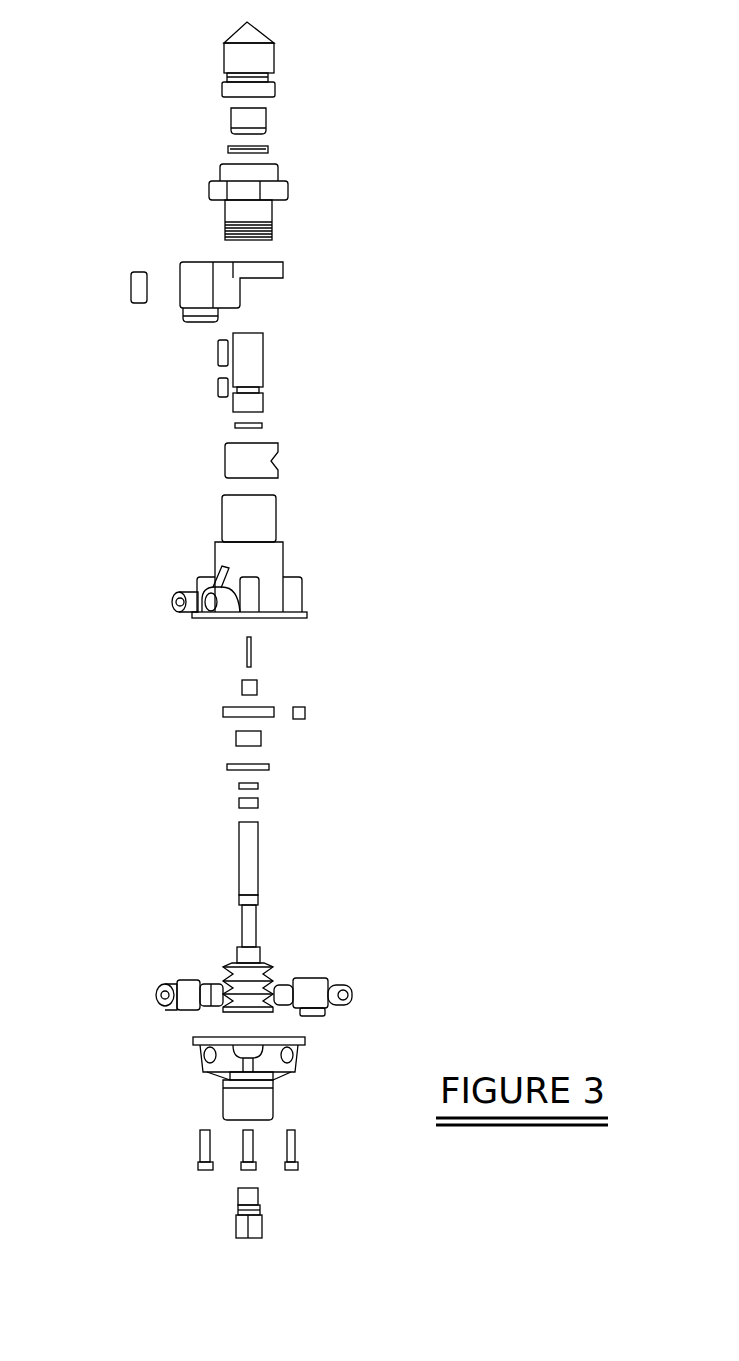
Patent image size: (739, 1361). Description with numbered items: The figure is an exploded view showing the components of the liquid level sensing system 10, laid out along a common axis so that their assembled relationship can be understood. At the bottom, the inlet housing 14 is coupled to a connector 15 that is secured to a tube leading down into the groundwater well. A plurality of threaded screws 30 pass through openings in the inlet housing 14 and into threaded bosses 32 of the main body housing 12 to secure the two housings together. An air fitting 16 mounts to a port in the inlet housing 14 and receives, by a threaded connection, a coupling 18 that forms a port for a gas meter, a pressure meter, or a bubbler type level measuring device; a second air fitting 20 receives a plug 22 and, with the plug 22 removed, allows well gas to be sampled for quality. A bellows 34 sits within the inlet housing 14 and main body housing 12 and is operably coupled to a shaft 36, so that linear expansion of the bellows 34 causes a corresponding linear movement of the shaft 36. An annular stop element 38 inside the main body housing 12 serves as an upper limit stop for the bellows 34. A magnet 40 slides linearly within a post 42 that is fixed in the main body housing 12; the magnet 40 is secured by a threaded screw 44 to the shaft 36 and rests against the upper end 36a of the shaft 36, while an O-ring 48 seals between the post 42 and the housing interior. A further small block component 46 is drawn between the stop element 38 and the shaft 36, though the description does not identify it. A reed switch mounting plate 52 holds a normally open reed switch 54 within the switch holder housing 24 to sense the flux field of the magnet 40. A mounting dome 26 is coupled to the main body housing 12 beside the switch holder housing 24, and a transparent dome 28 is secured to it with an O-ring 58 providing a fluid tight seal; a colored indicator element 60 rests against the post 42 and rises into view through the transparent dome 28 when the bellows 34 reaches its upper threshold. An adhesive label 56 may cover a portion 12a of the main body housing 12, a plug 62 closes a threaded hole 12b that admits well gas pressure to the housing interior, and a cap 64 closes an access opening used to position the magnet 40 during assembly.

The liquid level sensing system 10 is at (118, 82).
The main body housing 12 is at (232, 524).
The portion of the main body housing 12a is at (270, 503).
The threaded hole 12b is at (205, 615).
The inlet housing 14 is at (195, 1040).
The connector 15 is at (258, 1228).
The air fitting 16 is at (288, 985).
The coupling 18 is at (350, 990).
The air fitting 20 is at (214, 985).
The plug 22 is at (158, 990).
The switch holder housing 24 is at (190, 300).
The mounting dome 26 is at (215, 190).
The transparent dome 28 is at (258, 37).
The threaded screws 30 is at (240, 1155).
The threaded bosses 32 is at (292, 596).
The bellows 34 is at (255, 1000).
The shaft 36 is at (240, 845).
The upper end of the shaft 36a is at (250, 833).
The annular stop element 38 is at (228, 711).
The magnet 40 is at (248, 689).
The post 42 is at (252, 357).
The threaded screw 44 is at (247, 650).
The block 46 is at (262, 740).
The O-ring 48 is at (258, 425).
The reed switch mounting plate 52 is at (218, 350).
The reed switch 54 is at (218, 388).
The adhesive label 56 is at (237, 458).
The O-ring 58 is at (268, 148).
The colored indicator element 60 is at (240, 118).
The plug 62 is at (175, 600).
The cap 64 is at (138, 283).